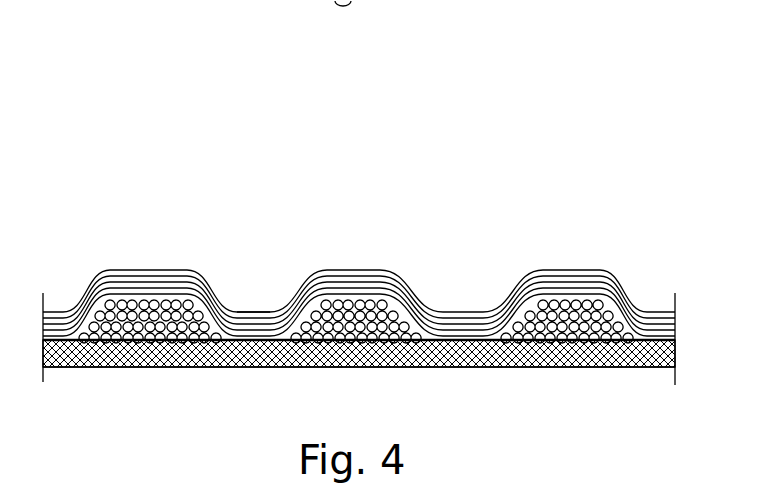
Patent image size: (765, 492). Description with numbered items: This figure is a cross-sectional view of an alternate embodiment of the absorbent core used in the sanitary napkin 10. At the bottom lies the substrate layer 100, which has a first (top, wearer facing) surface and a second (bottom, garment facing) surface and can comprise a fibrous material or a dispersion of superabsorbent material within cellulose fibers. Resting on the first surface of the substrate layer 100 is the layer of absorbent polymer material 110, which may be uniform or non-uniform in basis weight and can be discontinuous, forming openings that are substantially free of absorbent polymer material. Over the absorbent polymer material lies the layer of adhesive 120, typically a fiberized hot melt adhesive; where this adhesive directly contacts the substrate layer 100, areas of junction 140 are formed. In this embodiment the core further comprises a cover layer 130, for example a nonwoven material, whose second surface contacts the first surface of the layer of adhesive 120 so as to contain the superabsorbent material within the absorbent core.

The sanitary napkin 10 is at (504, 140).
The substrate layer 100 is at (152, 370).
The layer of absorbent polymer material 110 is at (146, 273).
The layer of adhesive 120 is at (302, 278).
The cover layer 130 is at (388, 281).
The areas of junction 140 is at (248, 273).